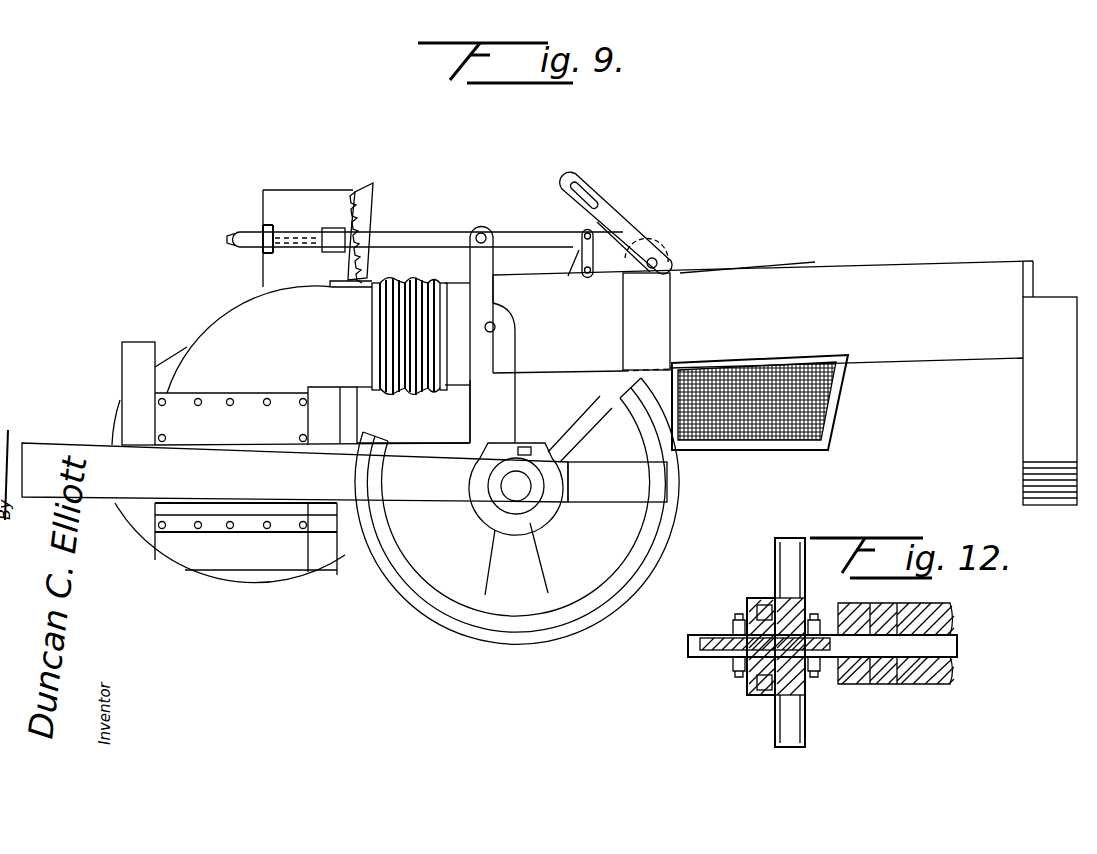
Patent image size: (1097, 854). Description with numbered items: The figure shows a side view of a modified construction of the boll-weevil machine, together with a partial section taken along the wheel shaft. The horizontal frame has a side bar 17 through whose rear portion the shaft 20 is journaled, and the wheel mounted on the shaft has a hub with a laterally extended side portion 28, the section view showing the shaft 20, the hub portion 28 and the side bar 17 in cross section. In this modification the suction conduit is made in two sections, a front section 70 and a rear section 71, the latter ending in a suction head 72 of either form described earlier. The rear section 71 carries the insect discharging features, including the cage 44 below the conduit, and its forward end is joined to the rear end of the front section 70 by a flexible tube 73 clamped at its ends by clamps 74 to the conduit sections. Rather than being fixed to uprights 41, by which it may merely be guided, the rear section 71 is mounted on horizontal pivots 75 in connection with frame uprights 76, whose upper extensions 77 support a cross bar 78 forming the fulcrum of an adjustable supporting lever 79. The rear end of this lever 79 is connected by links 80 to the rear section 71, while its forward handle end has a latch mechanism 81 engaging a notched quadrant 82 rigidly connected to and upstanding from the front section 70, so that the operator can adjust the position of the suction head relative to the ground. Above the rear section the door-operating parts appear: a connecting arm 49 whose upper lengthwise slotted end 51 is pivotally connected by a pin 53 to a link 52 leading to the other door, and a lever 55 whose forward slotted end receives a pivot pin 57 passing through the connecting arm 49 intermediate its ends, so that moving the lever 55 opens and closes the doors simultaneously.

In FIG. 9, the side bar 17 is at (344, 472).
In FIG. 12, the side bar 17 is at (862, 603).
In FIG. 9, the shaft 20 is at (516, 486).
In FIG. 12, the shaft 20 is at (688, 645).
In FIG. 9, the laterally extended side portion of the wheel hub 28 is at (523, 518).
In FIG. 12, the laterally extended side portion of the wheel hub 28 is at (745, 600).
In FIG. 9, the uprights 41 is at (652, 320).
In FIG. 9, the cage 44 is at (803, 455).
In FIG. 9, the connecting arm 49 is at (593, 205).
In FIG. 9, the lengthwise slotted end of the connecting arm 51 is at (583, 198).
In FIG. 9, the link 52 is at (628, 216).
In FIG. 9, the pin 53 is at (582, 222).
In FIG. 9, the lever 55 is at (720, 264).
In FIG. 9, the pivot pin 57 is at (665, 255).
In FIG. 9, the front section of the suction conduit 70 is at (234, 332).
In FIG. 9, the rear section of the suction conduit 71 is at (830, 283).
In FIG. 9, the suction head 72 is at (1042, 363).
In FIG. 9, the flexible tube 73 is at (412, 397).
In FIG. 9, the clamps 74 is at (377, 345).
In FIG. 9, the horizontal pivots 75 is at (496, 330).
In FIG. 9, the frame uprights 76 is at (506, 410).
In FIG. 9, the upper extensions 77 is at (478, 270).
In FIG. 9, the cross bar 78 is at (484, 234).
In FIG. 9, the adjustable supporting lever 79 is at (433, 231).
In FIG. 9, the links 80 is at (612, 228).
In FIG. 9, the latch mechanism 81 is at (262, 232).
In FIG. 9, the notched quadrant 82 is at (372, 215).